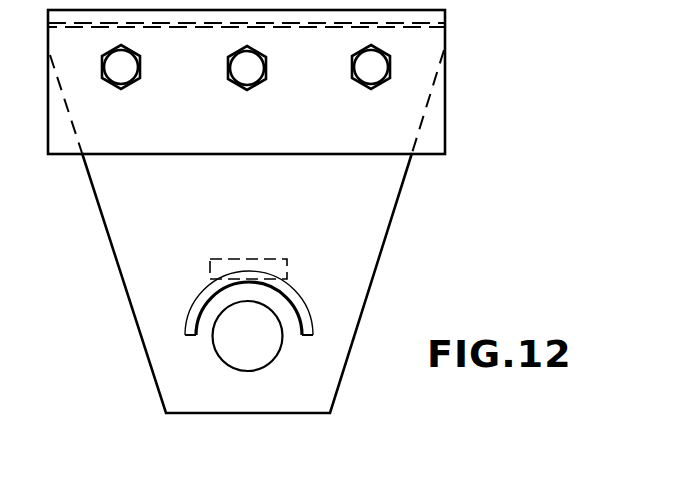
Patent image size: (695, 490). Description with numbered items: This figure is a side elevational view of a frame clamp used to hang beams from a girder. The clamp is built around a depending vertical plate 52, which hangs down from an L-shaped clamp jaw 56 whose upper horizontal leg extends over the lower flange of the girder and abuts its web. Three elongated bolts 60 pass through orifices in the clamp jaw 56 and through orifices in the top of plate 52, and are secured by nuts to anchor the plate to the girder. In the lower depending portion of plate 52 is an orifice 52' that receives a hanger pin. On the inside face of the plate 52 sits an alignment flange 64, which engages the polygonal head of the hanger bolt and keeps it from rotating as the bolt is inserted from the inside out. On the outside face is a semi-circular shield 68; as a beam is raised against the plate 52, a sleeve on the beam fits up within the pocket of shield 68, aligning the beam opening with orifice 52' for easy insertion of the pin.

The depending vertical plate 52 is at (277, 283).
The orifice 52' is at (270, 338).
The L-shaped clamp jaw 56 is at (438, 122).
The elongated bolts 60 is at (255, 68).
The alignment flange 64 is at (283, 262).
The semi-circular shield 68 is at (298, 303).